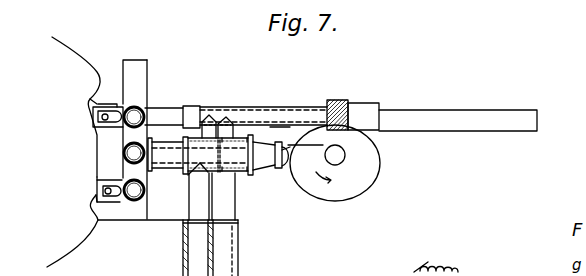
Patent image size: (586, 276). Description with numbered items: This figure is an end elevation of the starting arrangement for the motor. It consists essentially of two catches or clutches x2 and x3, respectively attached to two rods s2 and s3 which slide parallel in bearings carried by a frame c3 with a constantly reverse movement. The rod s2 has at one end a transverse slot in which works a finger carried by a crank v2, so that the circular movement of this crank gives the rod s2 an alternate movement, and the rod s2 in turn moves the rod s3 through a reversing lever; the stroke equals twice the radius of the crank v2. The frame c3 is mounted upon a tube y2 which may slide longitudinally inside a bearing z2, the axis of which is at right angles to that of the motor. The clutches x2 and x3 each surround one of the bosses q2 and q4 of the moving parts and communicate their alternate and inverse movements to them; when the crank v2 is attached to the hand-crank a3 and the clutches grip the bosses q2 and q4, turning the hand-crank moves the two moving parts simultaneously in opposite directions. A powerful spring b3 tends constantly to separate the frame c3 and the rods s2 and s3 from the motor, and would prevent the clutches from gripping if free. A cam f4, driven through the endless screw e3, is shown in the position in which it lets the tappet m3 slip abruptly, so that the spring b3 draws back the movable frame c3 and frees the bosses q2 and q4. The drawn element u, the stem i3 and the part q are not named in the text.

The catch x2 is at (122, 103).
The boss q2 is at (97, 125).
The rod s2 is at (140, 113).
The frame c3 is at (123, 139).
The rod s3 is at (139, 199).
The boss q4 is at (104, 191).
The catch x3 is at (122, 201).
The bar u is at (170, 117).
The crank v2 is at (196, 110).
The valve stems i3 is at (211, 151).
The endless screw e3 is at (338, 102).
The hand-crank a3 is at (432, 118).
The tube y2 is at (156, 164).
The bearing z2 is at (189, 168).
The spring b3 is at (242, 170).
The tappet m3 is at (278, 166).
The cam f4 is at (366, 179).
The spring q is at (430, 262).